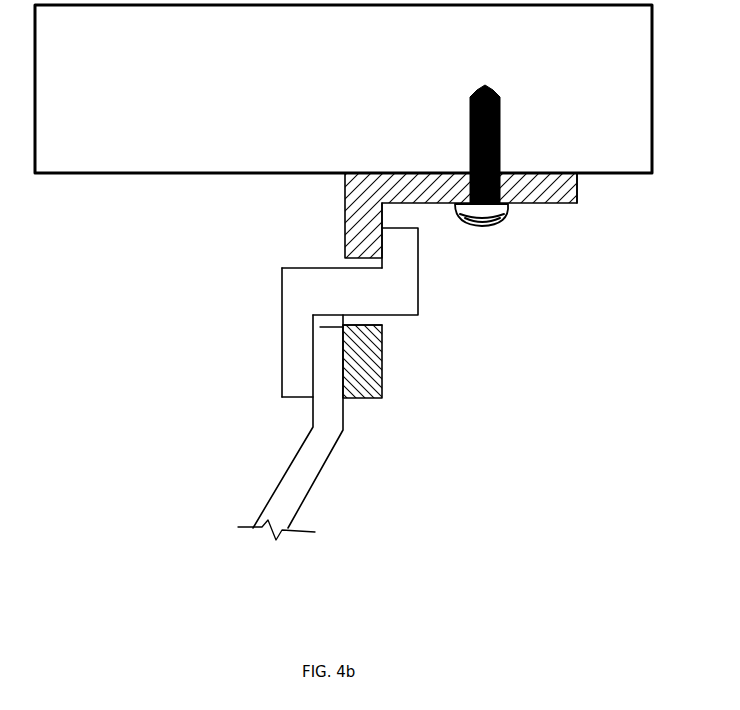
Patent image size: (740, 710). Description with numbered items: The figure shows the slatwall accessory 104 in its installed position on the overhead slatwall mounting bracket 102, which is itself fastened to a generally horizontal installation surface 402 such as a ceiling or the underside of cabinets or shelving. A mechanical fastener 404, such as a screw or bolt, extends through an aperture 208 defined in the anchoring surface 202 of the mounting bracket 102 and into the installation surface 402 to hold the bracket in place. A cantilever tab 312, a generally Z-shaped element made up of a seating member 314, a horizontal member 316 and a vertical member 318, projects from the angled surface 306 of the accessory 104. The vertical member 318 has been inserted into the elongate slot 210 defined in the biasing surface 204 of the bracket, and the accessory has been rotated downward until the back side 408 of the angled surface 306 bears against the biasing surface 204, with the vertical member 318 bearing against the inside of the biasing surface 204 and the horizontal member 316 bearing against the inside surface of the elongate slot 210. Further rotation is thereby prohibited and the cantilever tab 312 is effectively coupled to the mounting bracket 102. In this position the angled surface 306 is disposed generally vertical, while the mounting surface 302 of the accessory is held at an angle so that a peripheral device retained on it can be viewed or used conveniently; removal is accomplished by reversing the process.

The horizontal installation surface 402 is at (322, 68).
The overhead slatwall mounting bracket 102 is at (556, 214).
The anchoring surface 202 is at (578, 188).
The aperture 208 is at (495, 165).
The mechanical fastener 404 is at (490, 220).
The cantilever tab 312 is at (336, 300).
The seating member 314 is at (290, 350).
The horizontal member 316 is at (343, 285).
The vertical member 318 is at (415, 250).
The back side of the angled surface 408 is at (340, 338).
The biasing surface 204 is at (378, 372).
The elongate slot 210 is at (370, 322).
The angled surface 306 is at (346, 388).
The mounting surface 302 is at (297, 455).
The slatwall accessory 104 is at (330, 478).